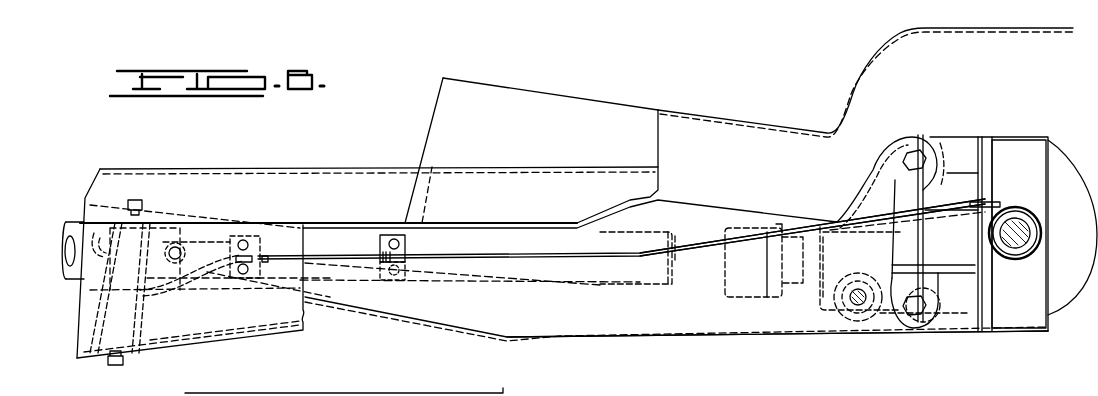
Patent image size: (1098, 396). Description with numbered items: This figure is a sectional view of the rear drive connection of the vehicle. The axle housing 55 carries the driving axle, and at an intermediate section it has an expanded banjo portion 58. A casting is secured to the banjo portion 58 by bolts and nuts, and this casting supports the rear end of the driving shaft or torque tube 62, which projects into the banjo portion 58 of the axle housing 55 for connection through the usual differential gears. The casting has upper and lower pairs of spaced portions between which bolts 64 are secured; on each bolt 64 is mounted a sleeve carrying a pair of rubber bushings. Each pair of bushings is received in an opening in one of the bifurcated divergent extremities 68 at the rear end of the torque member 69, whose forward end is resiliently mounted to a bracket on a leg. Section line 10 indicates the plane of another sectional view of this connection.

The section line 10- 10 is at (917, 110).
The axle housing 55 is at (1038, 221).
The banjo portion 58 is at (1027, 148).
The driving shaft or torque tube 62 is at (638, 233).
The bolt 64 is at (925, 156).
The bifurcated divergent extremities 68 is at (886, 167).
The torque member 69 is at (705, 325).